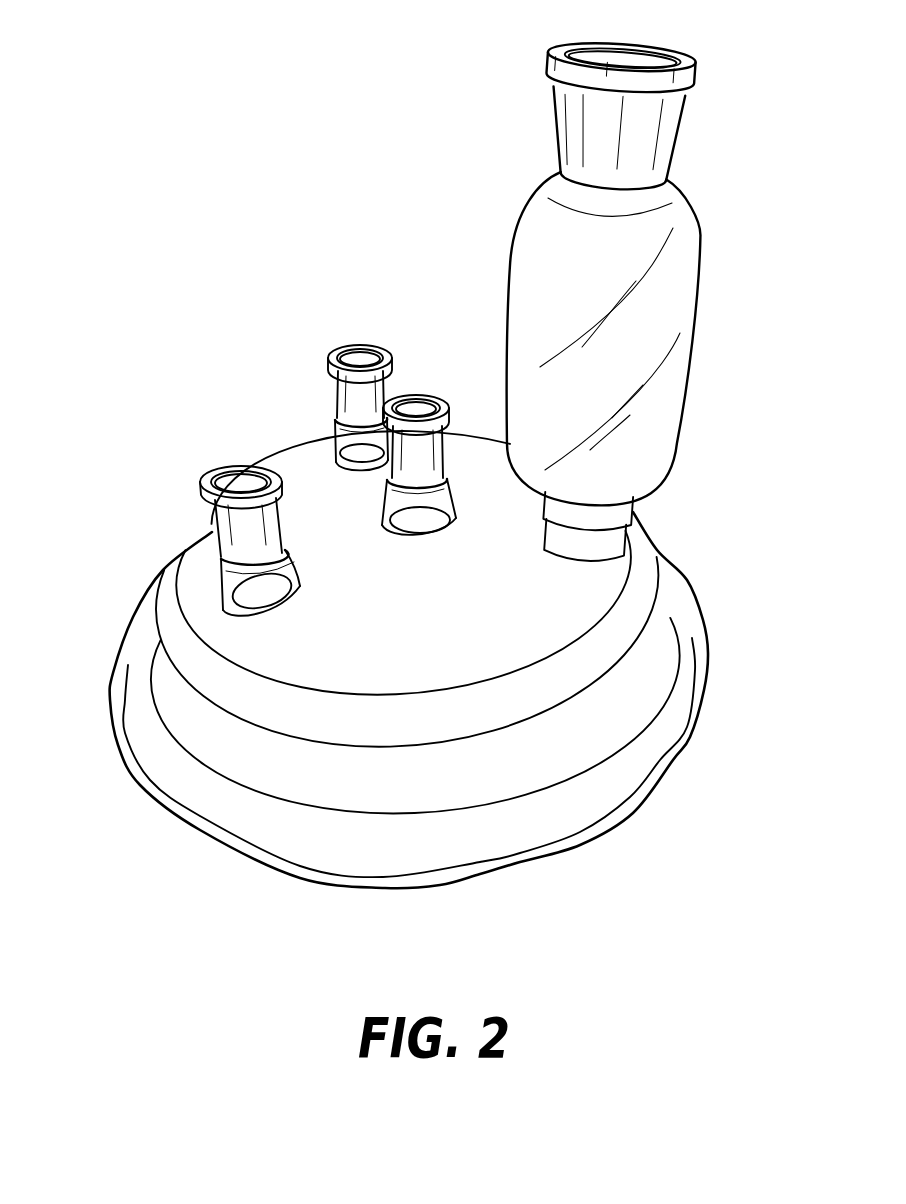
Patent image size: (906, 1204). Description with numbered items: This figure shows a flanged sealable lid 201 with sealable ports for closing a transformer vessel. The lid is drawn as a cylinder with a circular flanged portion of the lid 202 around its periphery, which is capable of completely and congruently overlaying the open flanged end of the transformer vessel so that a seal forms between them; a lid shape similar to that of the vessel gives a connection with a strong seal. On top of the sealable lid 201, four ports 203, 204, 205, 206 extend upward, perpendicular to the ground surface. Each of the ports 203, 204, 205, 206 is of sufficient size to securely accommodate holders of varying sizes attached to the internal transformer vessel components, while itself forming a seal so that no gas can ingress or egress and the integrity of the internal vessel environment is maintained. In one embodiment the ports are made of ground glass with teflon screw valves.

The sealable lid 201 is at (645, 592).
The flanged portion of the lid 202 is at (124, 742).
The port 203 is at (192, 534).
The port 204 is at (437, 449).
The port 205 is at (336, 388).
The port 206 is at (650, 134).